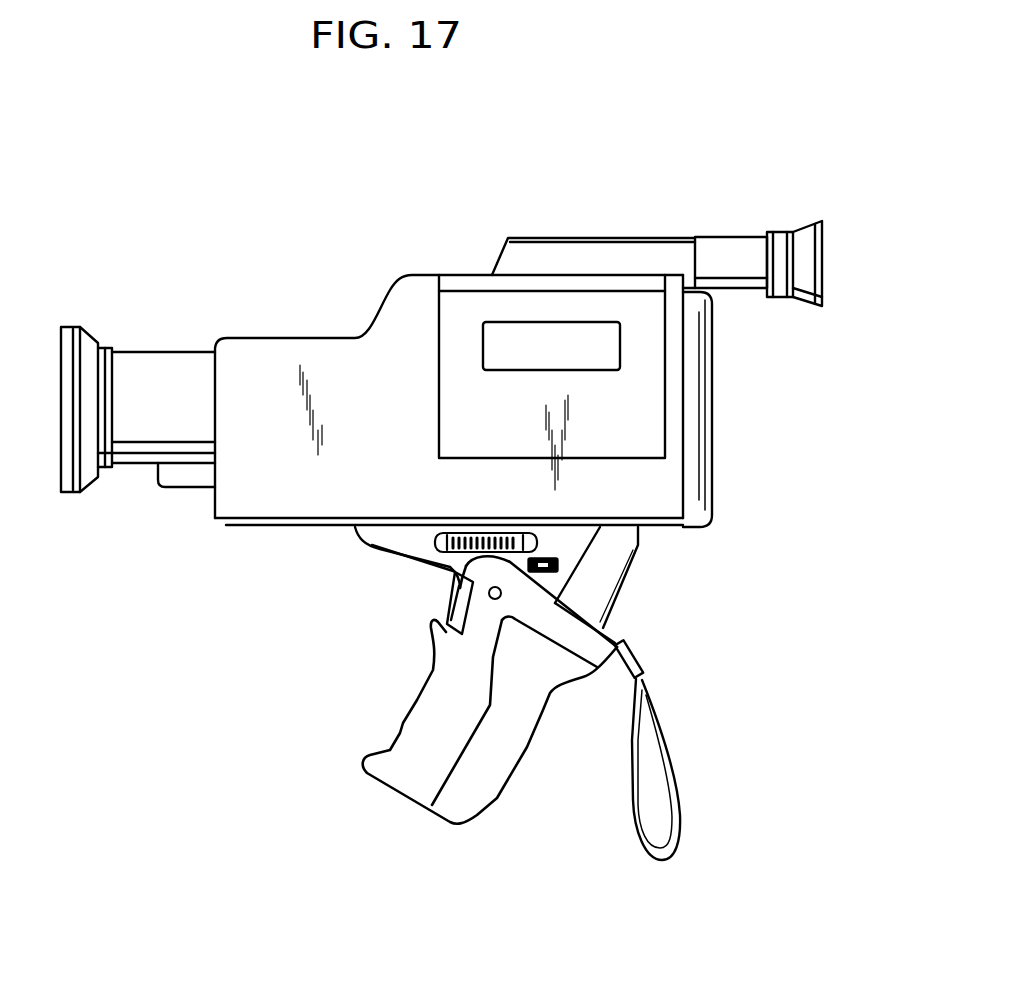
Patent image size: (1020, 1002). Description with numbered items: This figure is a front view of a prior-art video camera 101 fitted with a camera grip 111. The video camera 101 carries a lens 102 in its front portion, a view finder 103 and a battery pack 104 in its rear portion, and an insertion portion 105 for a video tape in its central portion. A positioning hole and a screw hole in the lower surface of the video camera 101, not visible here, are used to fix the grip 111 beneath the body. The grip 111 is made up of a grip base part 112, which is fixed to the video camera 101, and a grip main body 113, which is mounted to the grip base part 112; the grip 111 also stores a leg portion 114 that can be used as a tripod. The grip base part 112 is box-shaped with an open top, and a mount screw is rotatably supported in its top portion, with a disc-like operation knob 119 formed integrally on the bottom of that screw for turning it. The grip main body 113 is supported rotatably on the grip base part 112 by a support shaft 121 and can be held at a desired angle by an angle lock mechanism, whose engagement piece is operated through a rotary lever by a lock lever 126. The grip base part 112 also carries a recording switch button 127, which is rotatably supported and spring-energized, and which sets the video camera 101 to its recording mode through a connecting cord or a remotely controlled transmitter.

The video camera 101 is at (293, 332).
The lens 102 is at (147, 365).
The view finder 103 is at (733, 242).
The battery pack 104 is at (698, 436).
The insertion portion 105 is at (462, 303).
The grip 111 is at (621, 634).
The grip base part 112 is at (410, 536).
The grip main body 113 is at (490, 800).
The leg portion 114 is at (612, 569).
The operation knob 119 is at (455, 553).
The support shaft 121 is at (493, 600).
The lock lever 126 is at (543, 572).
The recording switch button 127 is at (436, 618).